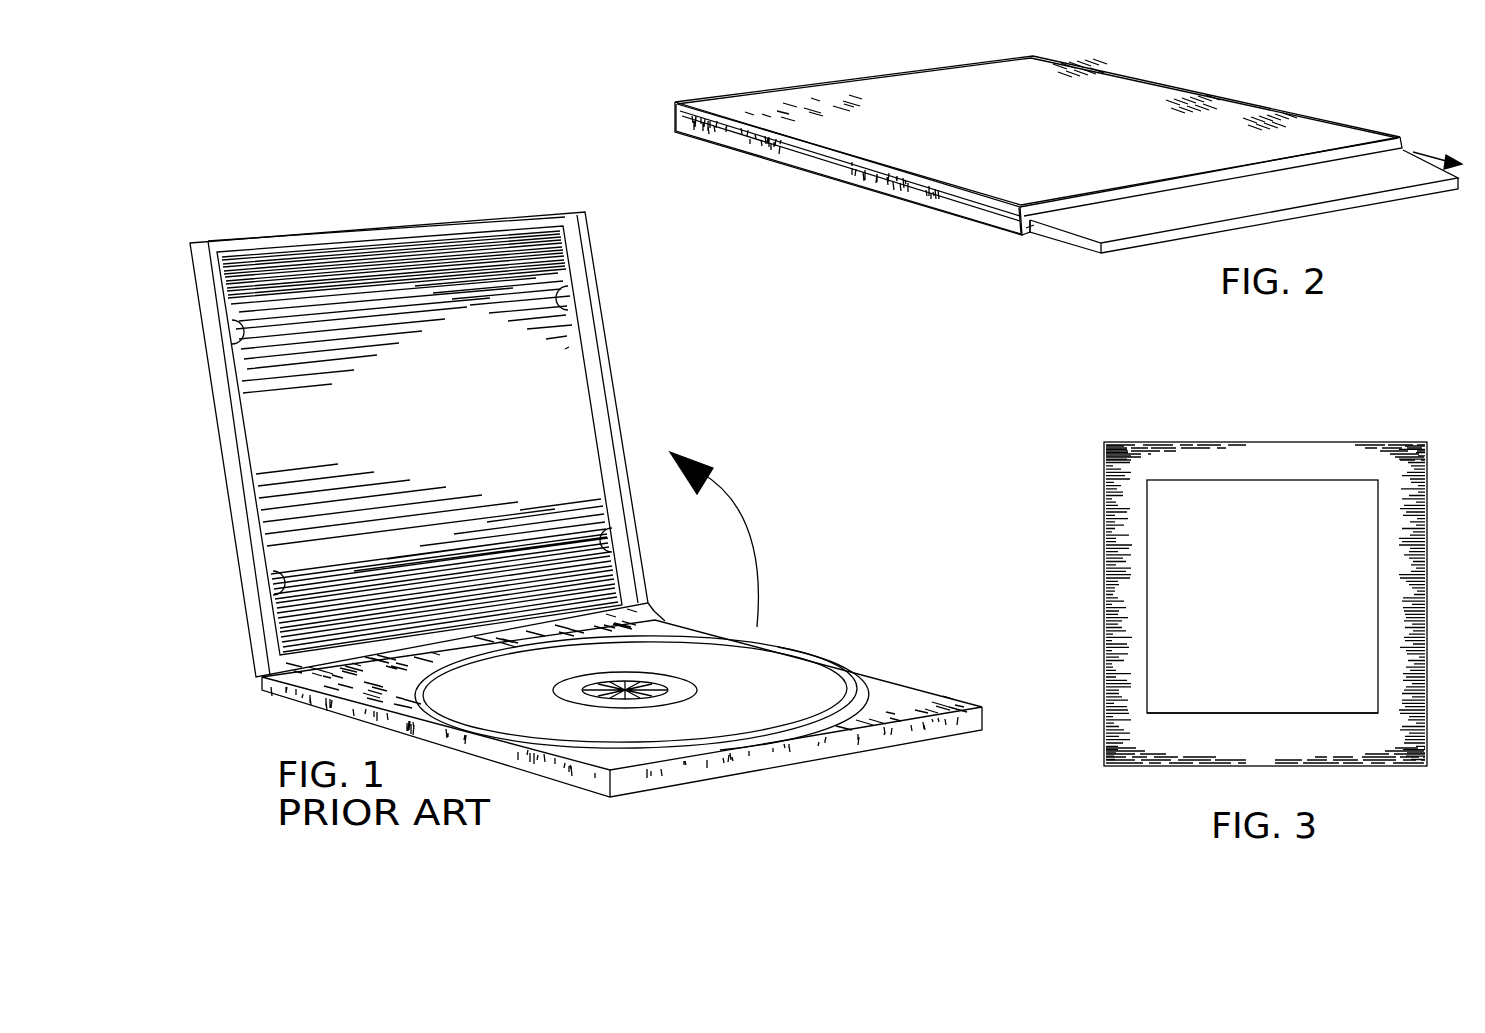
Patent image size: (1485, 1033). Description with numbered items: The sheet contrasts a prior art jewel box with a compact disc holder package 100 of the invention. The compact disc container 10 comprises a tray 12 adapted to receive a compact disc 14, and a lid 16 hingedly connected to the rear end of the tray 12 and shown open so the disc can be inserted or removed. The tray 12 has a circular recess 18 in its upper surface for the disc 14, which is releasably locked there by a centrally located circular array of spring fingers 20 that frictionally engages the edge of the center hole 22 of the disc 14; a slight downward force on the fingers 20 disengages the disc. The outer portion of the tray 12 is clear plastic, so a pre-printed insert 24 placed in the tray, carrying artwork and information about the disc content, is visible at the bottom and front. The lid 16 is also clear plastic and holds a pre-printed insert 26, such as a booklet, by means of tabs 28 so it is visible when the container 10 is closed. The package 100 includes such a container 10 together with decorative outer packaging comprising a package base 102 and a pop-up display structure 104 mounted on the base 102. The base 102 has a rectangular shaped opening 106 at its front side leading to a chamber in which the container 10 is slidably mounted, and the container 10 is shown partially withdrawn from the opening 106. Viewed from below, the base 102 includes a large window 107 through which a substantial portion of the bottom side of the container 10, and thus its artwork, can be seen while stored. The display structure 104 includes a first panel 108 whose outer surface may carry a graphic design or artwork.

In FIG. 1, the compact disc container 10 is at (808, 568).
In FIG. 2, the compact disc container 10 is at (1106, 244).
In FIG. 3, the compact disc container 10 is at (1269, 490).
In FIG. 1, the tray 12 is at (933, 707).
In FIG. 1, the compact disc 14 is at (760, 667).
In FIG. 1, the lid 16 is at (592, 335).
In FIG. 1, the circular recess 18 is at (845, 682).
In FIG. 1, the spring fingers 20 is at (635, 696).
In FIG. 1, the center hole 22 is at (552, 692).
In FIG. 1, the pre-printed insert 24 is at (620, 790).
In FIG. 1, the pre-printed insert 26 is at (565, 373).
In FIG. 1, the tabs 28 is at (238, 343).
In FIG. 2, the compact disc holder package 100 is at (1228, 84).
In FIG. 3, the compact disc holder package 100 is at (1163, 426).
In FIG. 2, the package base 102 is at (896, 190).
In FIG. 3, the package base 102 is at (1282, 743).
In FIG. 2, the pop-up display structure 104 is at (1000, 202).
In FIG. 2, the rectangular shaped opening 106 is at (1028, 243).
In FIG. 3, the window 107 is at (1208, 712).
In FIG. 2, the first panel 108 is at (1309, 124).